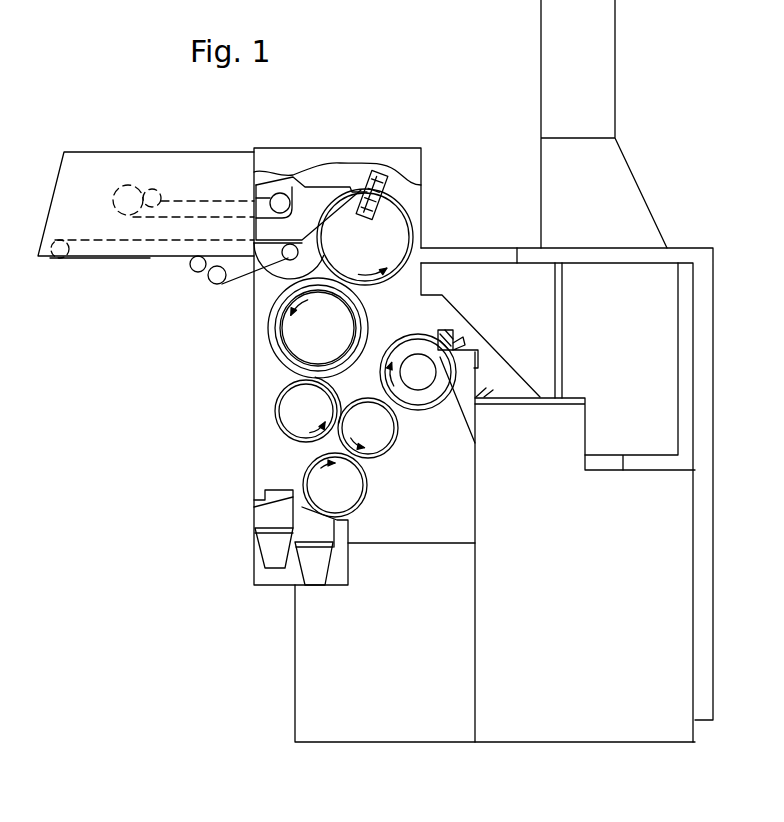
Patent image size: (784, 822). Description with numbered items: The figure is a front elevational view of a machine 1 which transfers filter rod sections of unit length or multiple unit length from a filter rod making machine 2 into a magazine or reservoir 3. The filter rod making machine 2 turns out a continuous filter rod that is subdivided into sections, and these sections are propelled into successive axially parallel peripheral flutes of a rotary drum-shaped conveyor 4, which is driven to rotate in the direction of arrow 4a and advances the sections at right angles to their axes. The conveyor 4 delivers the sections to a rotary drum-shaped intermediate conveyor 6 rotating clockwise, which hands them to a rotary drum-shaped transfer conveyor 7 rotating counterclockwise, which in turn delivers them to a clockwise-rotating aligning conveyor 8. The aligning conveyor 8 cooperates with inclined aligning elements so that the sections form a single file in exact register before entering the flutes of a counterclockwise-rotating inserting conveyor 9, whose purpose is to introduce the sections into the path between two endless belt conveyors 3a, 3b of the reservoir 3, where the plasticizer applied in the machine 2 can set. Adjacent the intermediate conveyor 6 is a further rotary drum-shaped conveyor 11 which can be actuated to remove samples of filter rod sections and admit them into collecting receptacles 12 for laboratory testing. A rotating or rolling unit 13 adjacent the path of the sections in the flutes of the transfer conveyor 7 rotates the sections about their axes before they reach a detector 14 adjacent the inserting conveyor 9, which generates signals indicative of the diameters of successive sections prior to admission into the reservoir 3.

The machine 1 is at (158, 488).
The filter rod making machine 2 is at (492, 105).
The reservoir 3 is at (142, 160).
The endless belt conveyor 3a is at (193, 200).
The endless belt conveyor 3b is at (88, 262).
The rotary drum-shaped conveyor 4 is at (418, 397).
The arrow 4a is at (394, 350).
The intermediate conveyor 6 is at (390, 445).
The transfer conveyor 7 is at (297, 418).
The aligning conveyor 8 is at (300, 341).
The inserting conveyor 9 is at (393, 236).
The rotary drum-shaped conveyor 11 is at (342, 497).
The collecting receptacles 12 is at (312, 570).
The rotating or rolling unit 13 is at (282, 398).
The detector 14 is at (412, 190).